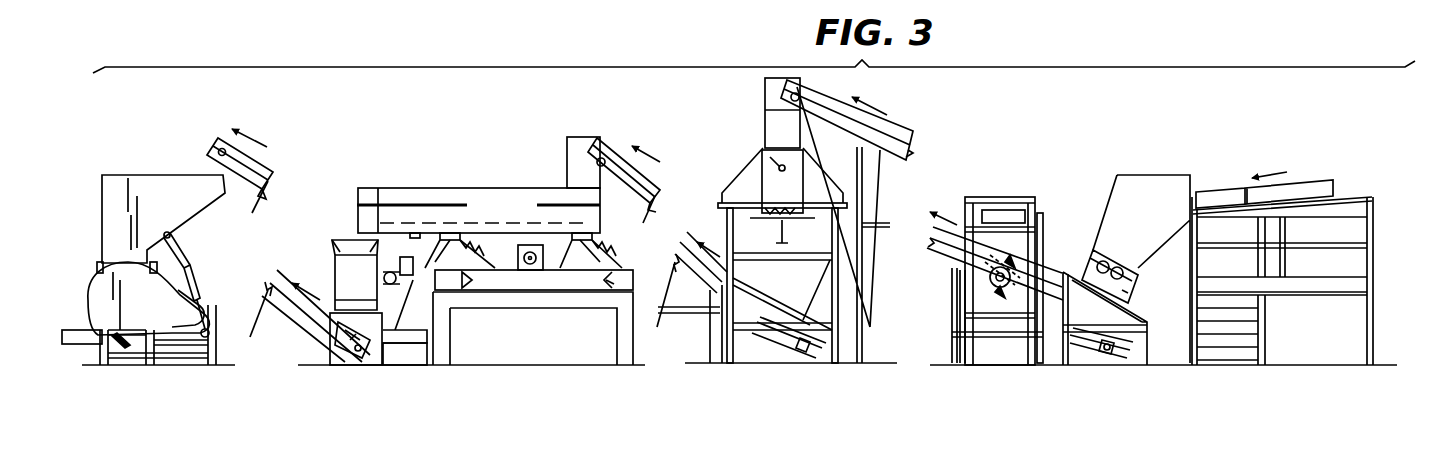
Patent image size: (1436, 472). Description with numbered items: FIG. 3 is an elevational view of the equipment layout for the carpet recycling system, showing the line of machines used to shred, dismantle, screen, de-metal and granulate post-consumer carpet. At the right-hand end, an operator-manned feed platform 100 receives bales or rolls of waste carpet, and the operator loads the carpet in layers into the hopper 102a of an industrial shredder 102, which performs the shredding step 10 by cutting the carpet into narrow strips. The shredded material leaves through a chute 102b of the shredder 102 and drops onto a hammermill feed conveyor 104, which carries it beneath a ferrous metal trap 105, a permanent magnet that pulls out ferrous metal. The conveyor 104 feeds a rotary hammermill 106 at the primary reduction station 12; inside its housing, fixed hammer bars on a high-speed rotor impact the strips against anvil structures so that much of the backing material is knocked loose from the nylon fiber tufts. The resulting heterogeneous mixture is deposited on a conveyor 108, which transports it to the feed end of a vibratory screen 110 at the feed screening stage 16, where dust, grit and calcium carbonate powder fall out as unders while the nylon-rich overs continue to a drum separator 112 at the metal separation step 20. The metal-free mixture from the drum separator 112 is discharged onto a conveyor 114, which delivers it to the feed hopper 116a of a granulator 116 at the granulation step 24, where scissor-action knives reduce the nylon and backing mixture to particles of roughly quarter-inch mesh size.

The shredding step 10 is at (1183, 130).
The primary reduction station 12 is at (742, 131).
The feed screening operation 16 is at (532, 156).
The metal separation operation 20 is at (328, 236).
The granulation stage 24 is at (122, 160).
The feed platform 100 is at (1355, 188).
The industrial shredder 102 is at (1093, 258).
The shredder hopper 102a is at (1173, 218).
The chute 102b is at (1097, 352).
The hammermill feed conveyor 104 is at (877, 130).
The ferrous metal trap 105 is at (1007, 242).
The rotary hammermill 106 is at (797, 196).
The conveyor 108 is at (617, 150).
The vibratory screen 110 is at (520, 216).
The drum separator 112 is at (371, 290).
The conveyor 114 is at (273, 157).
The granulator 116 is at (153, 316).
The feed hopper 116a is at (188, 206).